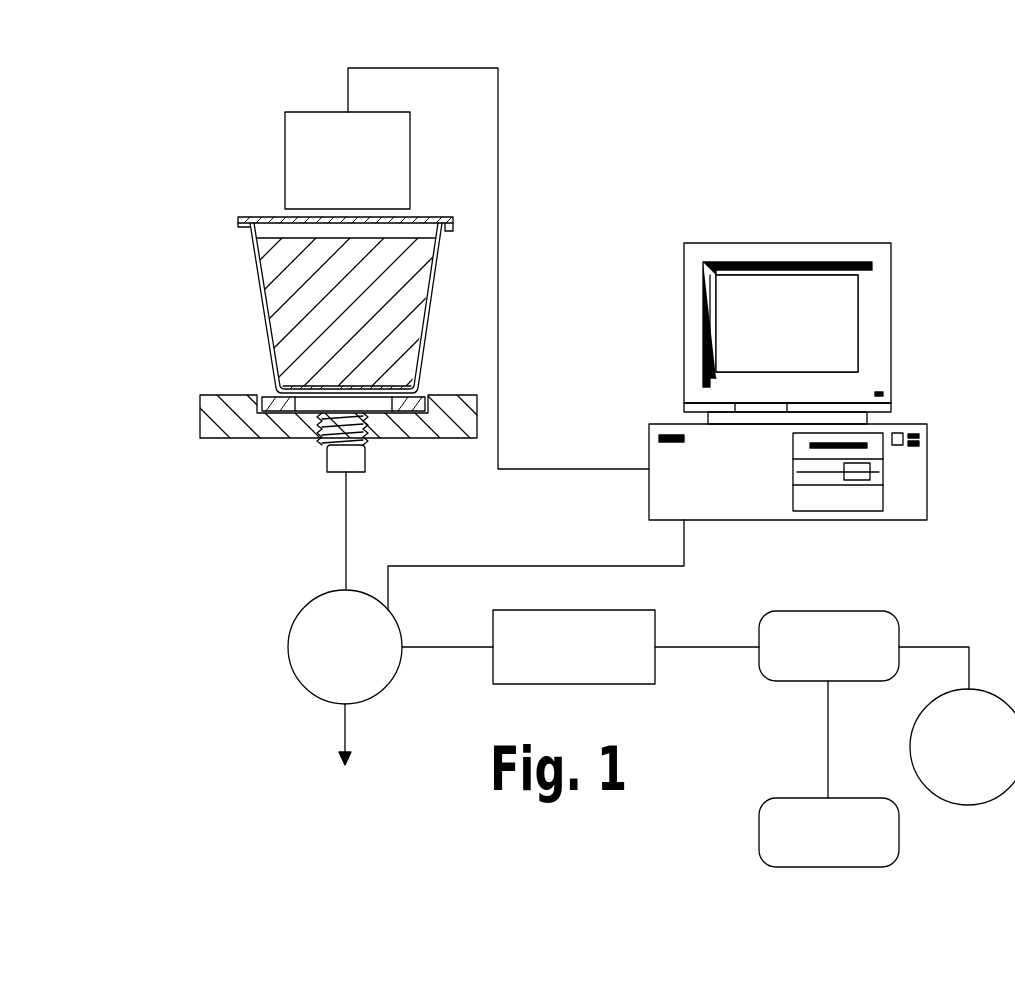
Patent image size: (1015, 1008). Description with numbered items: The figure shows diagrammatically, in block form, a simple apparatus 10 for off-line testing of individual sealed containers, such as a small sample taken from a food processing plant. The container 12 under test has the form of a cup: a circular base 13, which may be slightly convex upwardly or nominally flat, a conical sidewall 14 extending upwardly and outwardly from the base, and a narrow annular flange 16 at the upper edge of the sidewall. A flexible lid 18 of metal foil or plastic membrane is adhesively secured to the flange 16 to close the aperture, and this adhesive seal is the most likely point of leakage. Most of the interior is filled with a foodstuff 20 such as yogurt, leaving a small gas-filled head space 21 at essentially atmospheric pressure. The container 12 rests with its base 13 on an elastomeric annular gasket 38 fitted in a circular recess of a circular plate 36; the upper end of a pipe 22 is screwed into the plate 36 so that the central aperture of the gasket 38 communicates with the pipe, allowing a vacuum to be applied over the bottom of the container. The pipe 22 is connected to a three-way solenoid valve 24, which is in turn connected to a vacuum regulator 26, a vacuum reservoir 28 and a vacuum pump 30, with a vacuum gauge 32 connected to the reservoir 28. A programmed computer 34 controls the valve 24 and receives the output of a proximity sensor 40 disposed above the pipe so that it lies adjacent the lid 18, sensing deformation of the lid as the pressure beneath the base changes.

The apparatus 10 is at (584, 138).
The container 12 is at (243, 160).
The circular base 13 is at (330, 388).
The conical sidewall 14 is at (267, 325).
The annular flange 16 is at (243, 225).
The flexible lid 18 is at (240, 217).
The foodstuff 20 is at (365, 325).
The head space 21 is at (388, 230).
The pipe 22 is at (345, 460).
The three-way solenoid valve 24 is at (302, 607).
The vacuum regulator 26 is at (587, 684).
The vacuum reservoir 28 is at (828, 611).
The vacuum pump 30 is at (804, 798).
The vacuum gauge 32 is at (912, 725).
The programmed computer 34 is at (910, 487).
The circular plate 36 is at (232, 423).
The elastomeric annular gasket 38 is at (277, 402).
The proximity sensor 40 is at (300, 112).